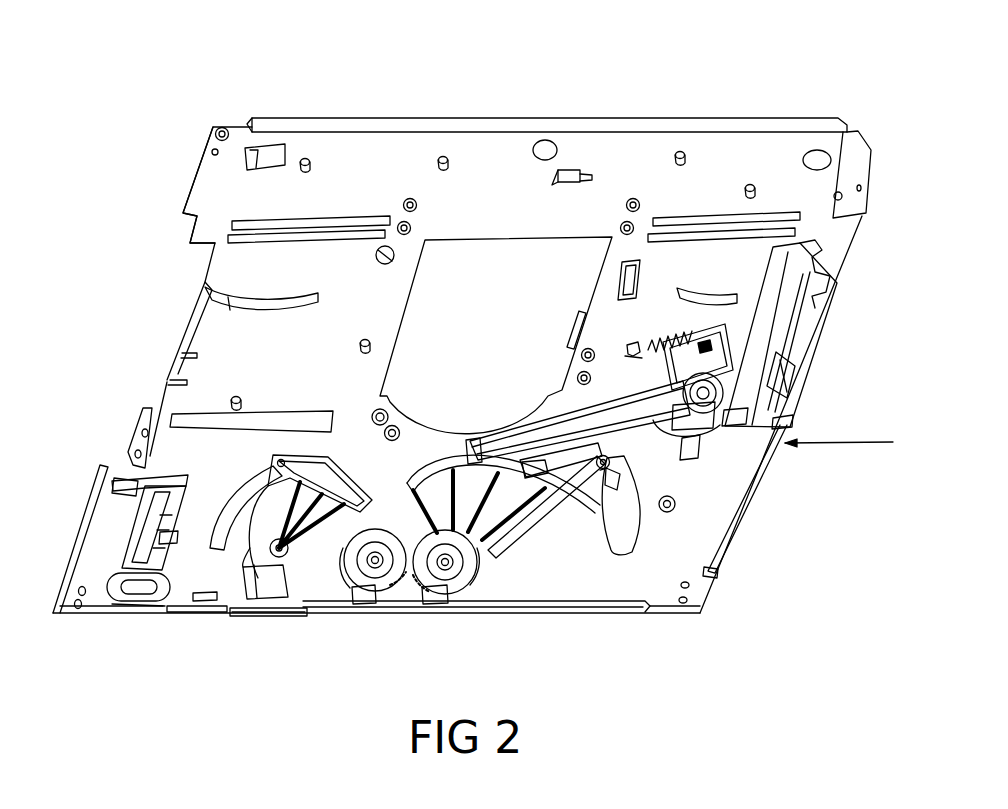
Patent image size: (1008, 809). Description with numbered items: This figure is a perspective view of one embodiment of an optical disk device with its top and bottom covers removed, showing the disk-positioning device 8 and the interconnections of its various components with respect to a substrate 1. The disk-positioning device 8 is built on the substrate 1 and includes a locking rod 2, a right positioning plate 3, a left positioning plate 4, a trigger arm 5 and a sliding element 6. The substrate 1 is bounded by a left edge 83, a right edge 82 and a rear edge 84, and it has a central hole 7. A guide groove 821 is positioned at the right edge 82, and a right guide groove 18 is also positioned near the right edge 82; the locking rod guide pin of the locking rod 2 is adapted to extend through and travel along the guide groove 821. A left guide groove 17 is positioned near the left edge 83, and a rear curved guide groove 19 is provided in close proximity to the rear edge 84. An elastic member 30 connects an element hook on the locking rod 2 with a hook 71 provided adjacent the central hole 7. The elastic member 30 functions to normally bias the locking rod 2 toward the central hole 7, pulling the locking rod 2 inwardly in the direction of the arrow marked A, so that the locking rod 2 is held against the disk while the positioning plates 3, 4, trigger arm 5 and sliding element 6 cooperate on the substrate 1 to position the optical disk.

The disk-positioning device 8 is at (323, 83).
The substrate 1 is at (400, 168).
The left edge 83 is at (200, 163).
The rear edge 84 is at (483, 612).
The right edge 82 is at (722, 532).
The guide groove 821 is at (817, 262).
The locking rod 2 is at (752, 321).
The elastic member 30 is at (652, 348).
The hook 71 is at (632, 352).
The central hole 7 is at (490, 398).
The right guide groove 18 is at (638, 525).
The right positioning plate 3 is at (507, 537).
The left positioning plate 4 is at (305, 555).
The trigger arm 5 is at (245, 600).
The rear curved guide groove 19 is at (258, 605).
The sliding element 6 is at (132, 530).
The left guide groove 17 is at (236, 492).